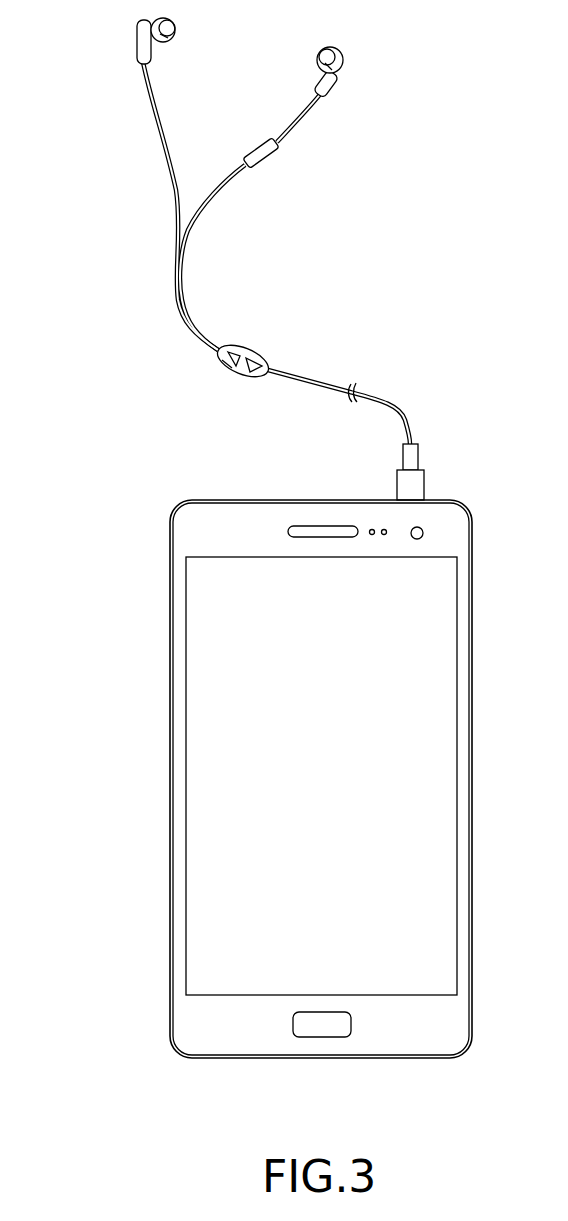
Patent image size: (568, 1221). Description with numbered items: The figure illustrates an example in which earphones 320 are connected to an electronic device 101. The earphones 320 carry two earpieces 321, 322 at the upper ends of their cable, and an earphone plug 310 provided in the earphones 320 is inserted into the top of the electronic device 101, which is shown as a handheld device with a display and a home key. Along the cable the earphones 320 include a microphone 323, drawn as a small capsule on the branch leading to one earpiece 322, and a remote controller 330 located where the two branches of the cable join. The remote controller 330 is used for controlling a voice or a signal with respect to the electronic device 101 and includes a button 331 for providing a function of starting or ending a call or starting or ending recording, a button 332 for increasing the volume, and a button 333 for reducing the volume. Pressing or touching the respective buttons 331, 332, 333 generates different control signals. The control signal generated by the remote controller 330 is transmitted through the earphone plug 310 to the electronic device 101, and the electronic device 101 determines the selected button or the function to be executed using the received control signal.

The electronic device 101 is at (474, 777).
The earphone plug 310 is at (426, 486).
The earphones 320 is at (174, 262).
The first earpiece 321 is at (137, 37).
The second earpiece 322 is at (348, 69).
The microphone 323 is at (268, 160).
The remote controller 330 is at (239, 355).
The button 331 is at (252, 345).
The button 332 is at (224, 364).
The button 333 is at (249, 372).